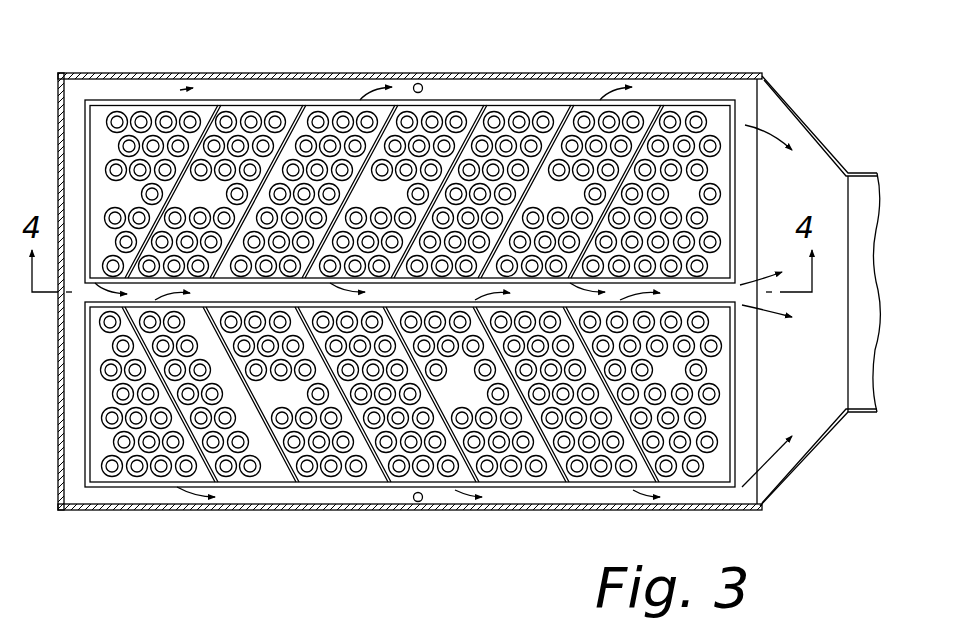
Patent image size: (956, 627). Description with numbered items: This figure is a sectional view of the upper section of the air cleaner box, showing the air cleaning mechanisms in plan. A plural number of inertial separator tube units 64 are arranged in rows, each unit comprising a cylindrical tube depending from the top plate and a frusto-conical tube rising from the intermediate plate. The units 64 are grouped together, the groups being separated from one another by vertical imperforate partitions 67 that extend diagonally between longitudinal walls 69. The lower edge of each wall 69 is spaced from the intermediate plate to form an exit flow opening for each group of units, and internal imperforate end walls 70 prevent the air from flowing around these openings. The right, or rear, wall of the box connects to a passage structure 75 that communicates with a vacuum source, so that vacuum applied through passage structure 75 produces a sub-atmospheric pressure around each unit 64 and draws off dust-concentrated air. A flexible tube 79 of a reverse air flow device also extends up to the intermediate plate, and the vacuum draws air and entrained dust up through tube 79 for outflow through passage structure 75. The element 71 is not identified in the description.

The inertial separator tube unit 64 is at (337, 112).
The vertical imperforate partition 67 is at (206, 100).
The longitudinal wall 69 is at (525, 101).
The internal imperforate end wall 70 is at (735, 182).
The housing wall 71 is at (85, 162).
The passage structure 75 is at (800, 465).
The flexible tube 79 is at (421, 84).